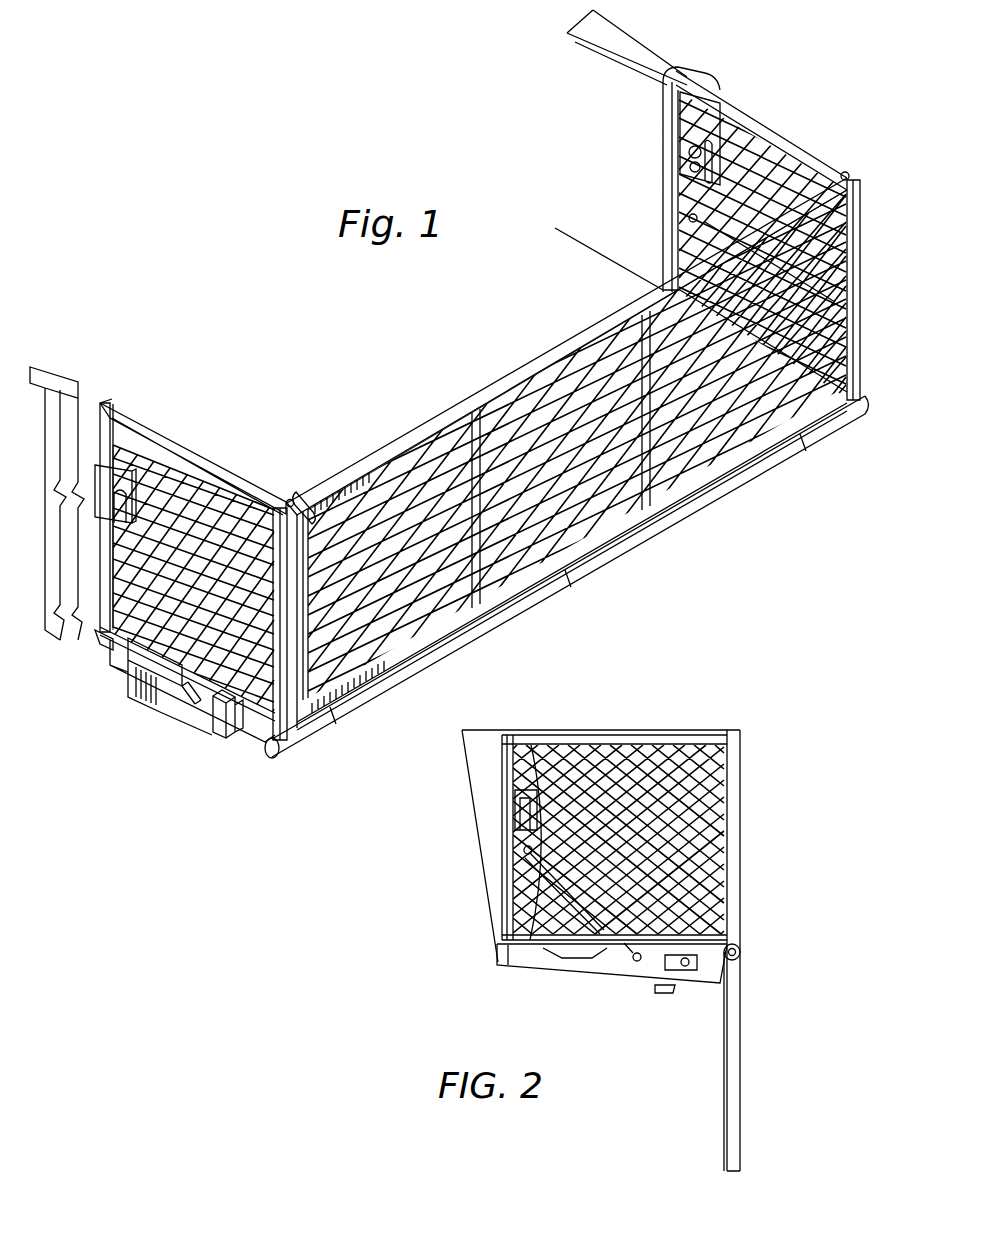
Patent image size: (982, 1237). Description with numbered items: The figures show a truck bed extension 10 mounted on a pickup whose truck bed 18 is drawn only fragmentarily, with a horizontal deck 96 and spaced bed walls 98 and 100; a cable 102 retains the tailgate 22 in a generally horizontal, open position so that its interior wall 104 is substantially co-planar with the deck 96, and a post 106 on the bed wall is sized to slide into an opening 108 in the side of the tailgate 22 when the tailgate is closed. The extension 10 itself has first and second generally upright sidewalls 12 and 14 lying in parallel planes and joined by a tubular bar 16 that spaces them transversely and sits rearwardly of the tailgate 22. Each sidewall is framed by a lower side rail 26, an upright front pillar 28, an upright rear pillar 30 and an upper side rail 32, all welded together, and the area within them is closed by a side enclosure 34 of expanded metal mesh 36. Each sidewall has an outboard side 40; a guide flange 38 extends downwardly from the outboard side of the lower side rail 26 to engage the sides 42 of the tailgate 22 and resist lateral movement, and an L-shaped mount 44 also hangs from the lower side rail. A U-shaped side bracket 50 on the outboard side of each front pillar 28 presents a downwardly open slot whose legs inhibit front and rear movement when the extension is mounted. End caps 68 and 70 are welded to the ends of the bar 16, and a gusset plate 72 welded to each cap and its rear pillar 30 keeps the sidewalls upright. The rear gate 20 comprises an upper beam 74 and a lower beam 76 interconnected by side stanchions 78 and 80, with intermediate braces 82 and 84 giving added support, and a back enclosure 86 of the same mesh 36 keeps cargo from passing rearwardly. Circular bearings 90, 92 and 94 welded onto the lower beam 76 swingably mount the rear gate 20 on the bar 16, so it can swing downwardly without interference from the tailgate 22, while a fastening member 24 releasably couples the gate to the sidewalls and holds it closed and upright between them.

In FIG. 1, the truck bed extension 10 is at (256, 362).
In FIG. 2, the truck bed extension 10 is at (722, 722).
In FIG. 1, the first sidewall 12 is at (240, 460).
In FIG. 1, the second sidewall 14 is at (775, 125).
In FIG. 2, the second sidewall 14 is at (652, 727).
In FIG. 1, the bar 16 is at (612, 572).
In FIG. 2, the bar 16 is at (732, 1057).
In FIG. 2, the truck bed 18 is at (502, 730).
In FIG. 1, the rear gate 20 is at (478, 388).
In FIG. 2, the rear gate 20 is at (748, 1060).
In FIG. 1, the tailgate 22 is at (222, 755).
In FIG. 2, the tailgate 22 is at (605, 988).
In FIG. 1, the fastening member 24 is at (292, 492).
In FIG. 1, the lower side rail 26 is at (212, 718).
In FIG. 2, the lower side rail 26 is at (525, 947).
In FIG. 1, the front pillar 28 is at (88, 640).
In FIG. 2, the front pillar 28 is at (515, 742).
In FIG. 1, the rear pillar 30 is at (278, 702).
In FIG. 2, the rear pillar 30 is at (742, 820).
In FIG. 1, the upper side rail 32 is at (198, 445).
In FIG. 2, the upper side rail 32 is at (612, 738).
In FIG. 1, the side enclosure 34 is at (135, 470).
In FIG. 1, the expanded metal mesh 36 is at (125, 455).
In FIG. 1, the guide flange 38 is at (135, 660).
In FIG. 2, the guide flange 38 is at (562, 960).
In FIG. 1, the outboard side 40 is at (105, 633).
In FIG. 1, the sides of the tailgate 42 is at (152, 688).
In FIG. 2, the sides of the tailgate 42 is at (572, 967).
In FIG. 1, the L-shaped mount 44 is at (210, 718).
In FIG. 1, the U-shaped side bracket 50 is at (100, 505).
In FIG. 1, the end cap 68 is at (282, 760).
In FIG. 1, the end cap 70 is at (860, 410).
In FIG. 1, the gusset plate 72 is at (300, 752).
In FIG. 1, the upper beam 74 is at (410, 432).
In FIG. 1, the lower beam 76 is at (405, 665).
In FIG. 1, the side stanchion 78 is at (362, 700).
In FIG. 1, the side stanchion 80 is at (840, 258).
In FIG. 1, the intermediate brace 82 is at (482, 602).
In FIG. 1, the intermediate brace 84 is at (690, 500).
In FIG. 1, the back enclosure 86 is at (556, 400).
In FIG. 1, the circular bearing 90 is at (332, 744).
In FIG. 1, the circular bearing 92 is at (580, 588).
In FIG. 1, the circular bearing 94 is at (830, 440).
In FIG. 1, the deck 96 is at (320, 320).
In FIG. 1, the bed wall 98 is at (48, 366).
In FIG. 1, the bed wall 100 is at (650, 65).
In FIG. 1, the cable 102 is at (195, 700).
In FIG. 2, the cable 102 is at (525, 920).
In FIG. 1, the interior wall 104 is at (700, 440).
In FIG. 1, the post 106 is at (690, 165).
In FIG. 2, the post 106 is at (520, 800).
In FIG. 2, the opening 108 is at (690, 972).